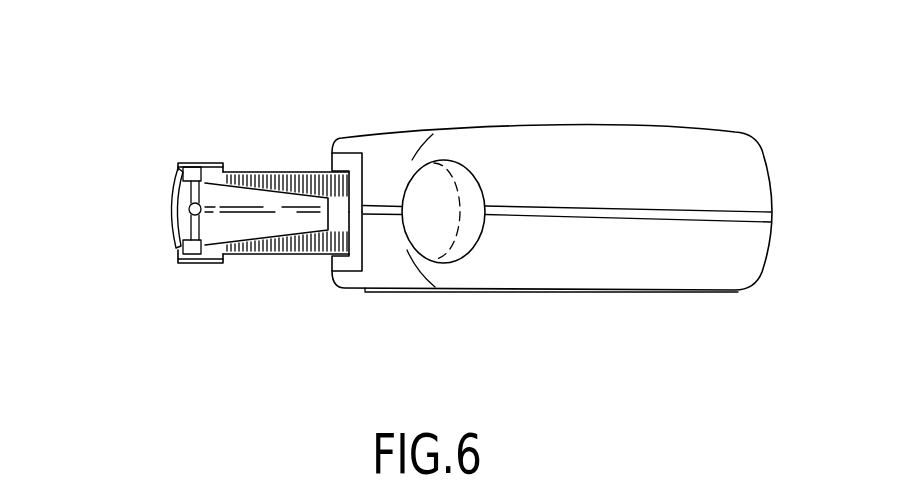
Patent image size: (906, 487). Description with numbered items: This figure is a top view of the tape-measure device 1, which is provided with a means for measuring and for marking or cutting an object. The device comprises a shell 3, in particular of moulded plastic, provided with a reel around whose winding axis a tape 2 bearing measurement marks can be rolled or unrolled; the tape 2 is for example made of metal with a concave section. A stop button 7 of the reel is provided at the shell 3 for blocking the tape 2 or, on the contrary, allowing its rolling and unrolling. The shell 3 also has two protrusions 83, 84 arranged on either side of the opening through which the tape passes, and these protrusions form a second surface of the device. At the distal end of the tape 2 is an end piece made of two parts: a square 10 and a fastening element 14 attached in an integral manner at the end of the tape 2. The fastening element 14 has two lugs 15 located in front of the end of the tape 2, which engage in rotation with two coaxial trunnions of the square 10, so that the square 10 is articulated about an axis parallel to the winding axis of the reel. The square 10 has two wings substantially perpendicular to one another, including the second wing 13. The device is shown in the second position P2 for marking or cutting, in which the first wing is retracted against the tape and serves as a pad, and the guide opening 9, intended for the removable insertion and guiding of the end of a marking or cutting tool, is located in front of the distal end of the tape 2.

The tape-measure device 1 is at (414, 222).
The tape 2 is at (295, 173).
The shell 3 is at (572, 140).
The stop button 7 is at (467, 168).
The guide opening 9 is at (188, 209).
The square 10 is at (166, 168).
The second wing 13 is at (176, 237).
The fastening element 14 is at (253, 228).
The lugs 15 is at (193, 165).
The protrusion 83 is at (343, 280).
The protrusion 84 is at (343, 140).
The second position P2 is at (157, 122).